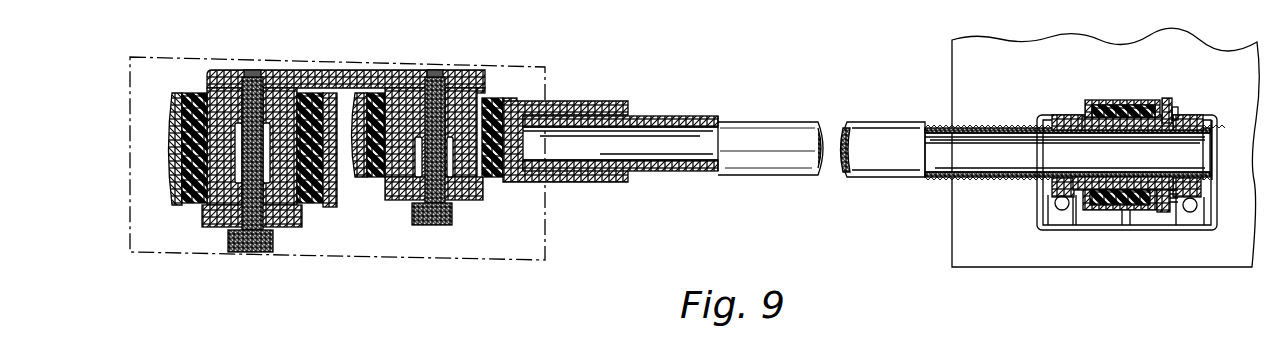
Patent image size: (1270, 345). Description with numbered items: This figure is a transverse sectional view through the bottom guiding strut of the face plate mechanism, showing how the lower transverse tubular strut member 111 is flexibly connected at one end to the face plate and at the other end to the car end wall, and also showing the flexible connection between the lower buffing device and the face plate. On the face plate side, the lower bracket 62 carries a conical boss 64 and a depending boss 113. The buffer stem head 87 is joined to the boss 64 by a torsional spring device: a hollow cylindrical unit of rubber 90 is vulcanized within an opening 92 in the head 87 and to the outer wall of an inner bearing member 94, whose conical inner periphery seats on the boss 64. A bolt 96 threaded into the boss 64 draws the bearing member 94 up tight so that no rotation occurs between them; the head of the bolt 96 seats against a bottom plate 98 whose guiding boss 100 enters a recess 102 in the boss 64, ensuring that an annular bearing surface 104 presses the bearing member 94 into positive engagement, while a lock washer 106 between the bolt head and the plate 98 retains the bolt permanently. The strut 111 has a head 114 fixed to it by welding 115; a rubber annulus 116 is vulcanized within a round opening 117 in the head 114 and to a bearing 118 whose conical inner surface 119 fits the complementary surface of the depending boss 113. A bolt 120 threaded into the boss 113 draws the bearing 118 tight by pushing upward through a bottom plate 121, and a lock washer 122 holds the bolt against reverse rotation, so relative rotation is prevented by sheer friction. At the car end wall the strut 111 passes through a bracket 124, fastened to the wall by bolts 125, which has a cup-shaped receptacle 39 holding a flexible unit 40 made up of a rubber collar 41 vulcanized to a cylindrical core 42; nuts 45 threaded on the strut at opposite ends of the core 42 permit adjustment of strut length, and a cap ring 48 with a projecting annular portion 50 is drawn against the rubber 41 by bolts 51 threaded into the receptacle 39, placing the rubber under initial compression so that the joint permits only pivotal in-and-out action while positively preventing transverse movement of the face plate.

The lower bracket 62 is at (325, 70).
The hollow cylindrical unit of rubber 90 is at (196, 92).
The recess 102 is at (178, 118).
The inner bearing member 94 is at (237, 137).
The guiding boss 100 is at (233, 193).
The buffer stem head 87 is at (165, 198).
The opening 92 is at (207, 190).
The bottom plate 98 is at (220, 227).
The bolt 96 is at (250, 248).
The boss 64 is at (278, 227).
The lock washer 106 is at (284, 230).
The conical inner surface 119 is at (465, 110).
The rubber annulus 116 is at (497, 102).
The strut head 114 is at (597, 103).
The weld 115 is at (632, 116).
The lower transverse tubular strut member 111 is at (792, 122).
The round opening 117 is at (372, 178).
The annular bearing surface 104 is at (338, 195).
The bearing 118 is at (384, 188).
The bolt 120 is at (428, 222).
The lock washer 122 is at (457, 212).
The depending boss 113 is at (465, 198).
The bottom plate 121 is at (468, 204).
The cup-shaped receptacle 39 is at (1098, 100).
The collar of flexible material 41 is at (1092, 112).
The flexible unit 40 is at (1137, 105).
The cap ring 48 is at (1165, 100).
The bolt 51 is at (1176, 110).
The nut 45 is at (1060, 117).
The bracket 124 is at (1233, 107).
The cylindrical core portion 42 is at (1108, 128).
The projecting annular portion 50 is at (1145, 210).
The bolt 125 is at (1055, 208).